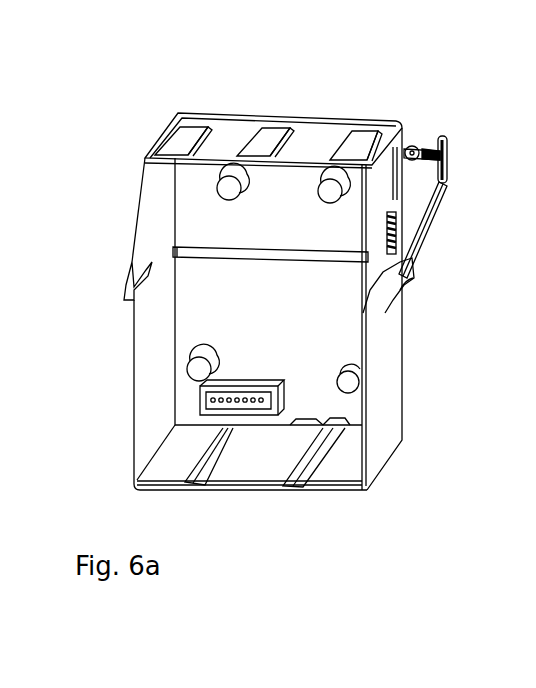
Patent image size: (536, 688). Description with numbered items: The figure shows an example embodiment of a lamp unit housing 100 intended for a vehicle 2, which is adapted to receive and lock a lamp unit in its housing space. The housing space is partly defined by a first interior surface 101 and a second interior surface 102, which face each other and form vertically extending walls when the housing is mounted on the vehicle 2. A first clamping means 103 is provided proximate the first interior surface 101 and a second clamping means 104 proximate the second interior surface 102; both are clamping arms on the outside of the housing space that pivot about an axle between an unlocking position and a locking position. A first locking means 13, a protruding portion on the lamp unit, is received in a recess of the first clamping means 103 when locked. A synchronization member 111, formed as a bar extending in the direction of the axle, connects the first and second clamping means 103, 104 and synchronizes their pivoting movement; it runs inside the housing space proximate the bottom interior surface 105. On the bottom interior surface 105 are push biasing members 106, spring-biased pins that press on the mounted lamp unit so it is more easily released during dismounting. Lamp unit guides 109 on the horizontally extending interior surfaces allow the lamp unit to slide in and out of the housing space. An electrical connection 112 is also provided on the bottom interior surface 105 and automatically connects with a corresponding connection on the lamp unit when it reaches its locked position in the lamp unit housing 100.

The lamp unit housing 100 is at (267, 301).
The first interior surface 101 is at (355, 340).
The second interior surface 102 is at (174, 375).
The first clamping means 103 is at (420, 277).
The second clamping means 104 is at (120, 273).
The bottom interior surface 105 is at (284, 233).
The push biasing member 106 is at (330, 196).
The lamp unit guide 109 is at (205, 484).
The synchronization member 111 is at (287, 256).
The electrical connection 112 is at (241, 418).
The vehicle 2 is at (434, 219).
The first locking means 13 is at (535, 292).